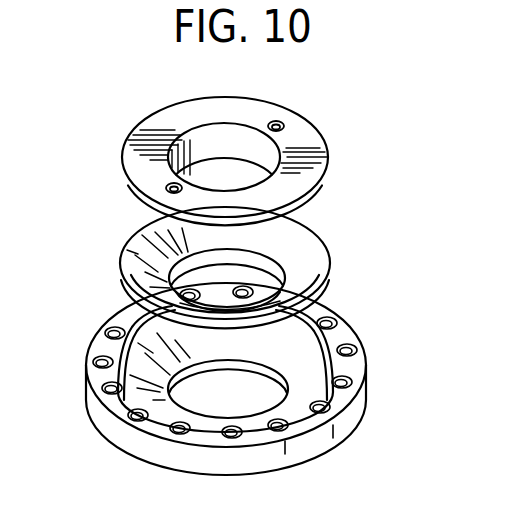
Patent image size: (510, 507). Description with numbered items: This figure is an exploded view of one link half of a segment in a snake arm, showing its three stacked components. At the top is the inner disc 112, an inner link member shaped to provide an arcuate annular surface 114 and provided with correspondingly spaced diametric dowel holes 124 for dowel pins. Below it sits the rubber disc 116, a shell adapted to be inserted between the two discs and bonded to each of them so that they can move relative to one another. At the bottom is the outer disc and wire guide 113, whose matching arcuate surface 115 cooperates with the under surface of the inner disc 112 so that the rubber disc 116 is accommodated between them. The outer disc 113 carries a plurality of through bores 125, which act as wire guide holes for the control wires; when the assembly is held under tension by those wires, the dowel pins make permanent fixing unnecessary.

The inner disc 112 is at (172, 115).
The diametric dowel holes 124 is at (283, 124).
The arcuate annular surface 114 is at (167, 214).
The rubber disc 116 is at (330, 236).
The outer disc and wire guide 113 is at (345, 335).
The through bores 125 is at (337, 380).
The arcuate surface 115 is at (150, 346).